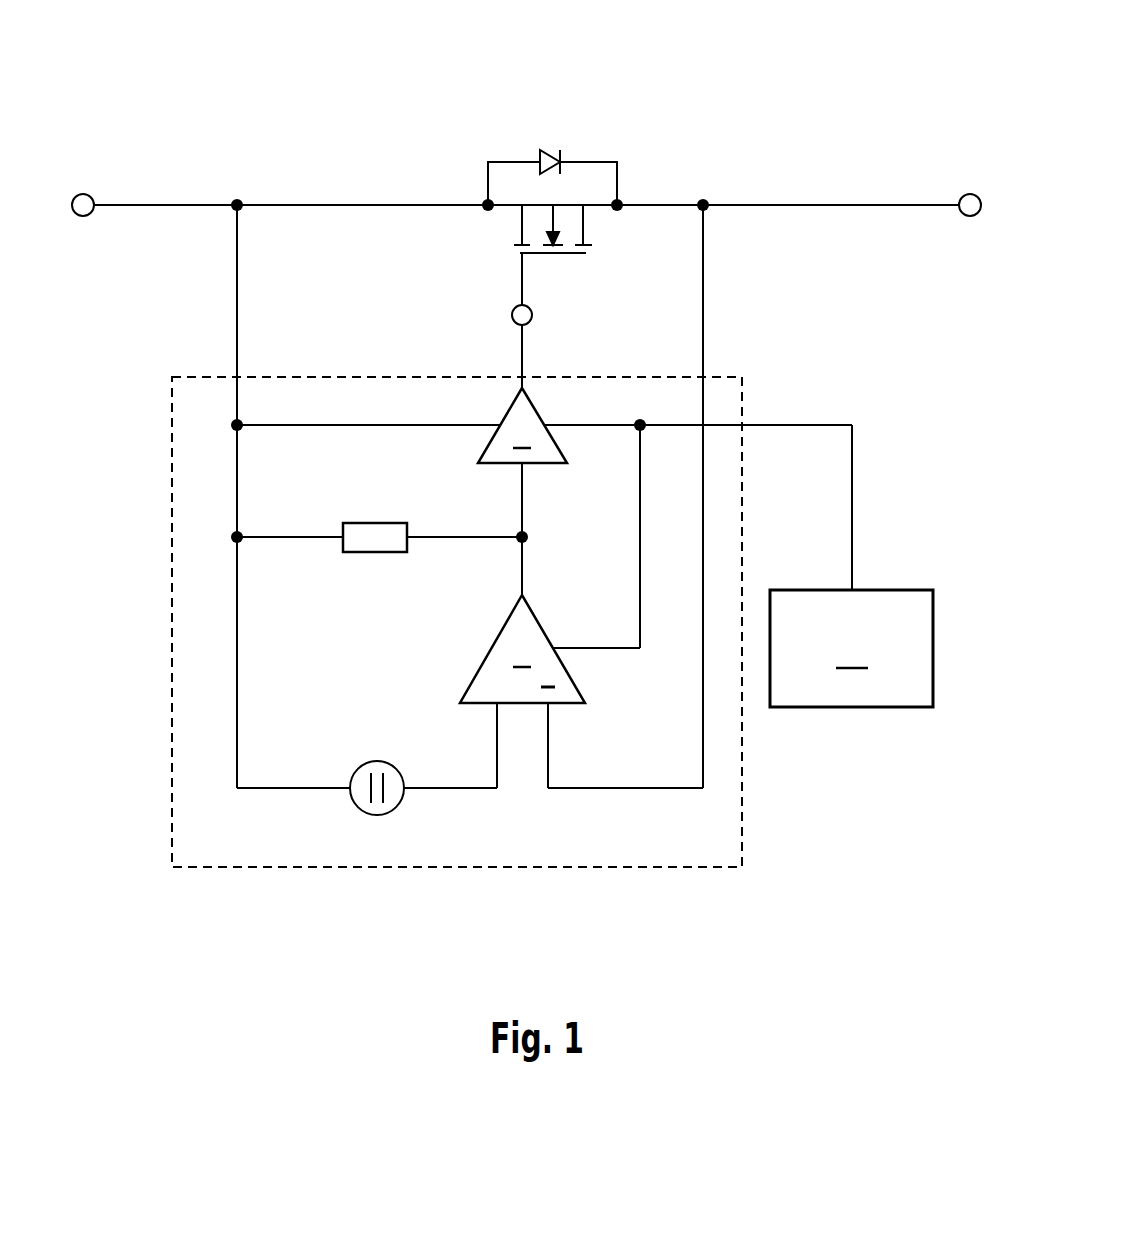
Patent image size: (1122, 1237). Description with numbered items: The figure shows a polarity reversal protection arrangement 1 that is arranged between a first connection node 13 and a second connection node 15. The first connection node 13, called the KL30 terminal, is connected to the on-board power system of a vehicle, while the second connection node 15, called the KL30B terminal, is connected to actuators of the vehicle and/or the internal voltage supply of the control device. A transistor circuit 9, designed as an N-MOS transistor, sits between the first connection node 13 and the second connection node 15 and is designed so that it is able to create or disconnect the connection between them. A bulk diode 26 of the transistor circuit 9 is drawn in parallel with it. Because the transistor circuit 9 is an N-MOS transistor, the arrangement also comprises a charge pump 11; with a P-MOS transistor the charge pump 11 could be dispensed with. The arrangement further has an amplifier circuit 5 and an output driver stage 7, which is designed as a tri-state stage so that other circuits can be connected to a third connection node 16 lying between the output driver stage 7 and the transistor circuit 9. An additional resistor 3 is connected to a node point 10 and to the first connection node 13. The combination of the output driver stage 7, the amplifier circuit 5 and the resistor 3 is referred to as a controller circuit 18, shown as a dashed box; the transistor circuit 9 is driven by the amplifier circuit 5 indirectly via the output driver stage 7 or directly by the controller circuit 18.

The polarity reversal protection arrangement 1 is at (796, 72).
The resistor 3 is at (377, 553).
The amplifier circuit 5 is at (522, 649).
The output driver stage 7 is at (522, 425).
The transistor circuit 9 is at (494, 240).
The node point 10 is at (530, 537).
The charge pump 11 is at (851, 648).
The first connection node 13 is at (83, 194).
The second connection node 15 is at (968, 217).
The third connection node 16 is at (533, 315).
The controller circuit 18 is at (743, 815).
The bulk diode 26 is at (548, 150).